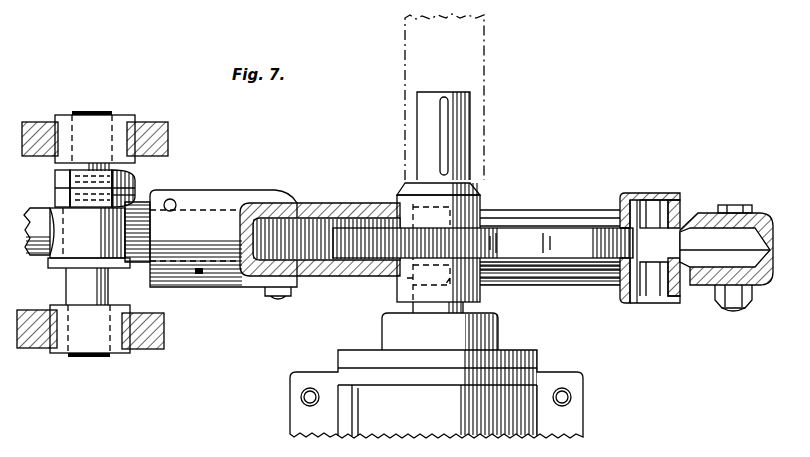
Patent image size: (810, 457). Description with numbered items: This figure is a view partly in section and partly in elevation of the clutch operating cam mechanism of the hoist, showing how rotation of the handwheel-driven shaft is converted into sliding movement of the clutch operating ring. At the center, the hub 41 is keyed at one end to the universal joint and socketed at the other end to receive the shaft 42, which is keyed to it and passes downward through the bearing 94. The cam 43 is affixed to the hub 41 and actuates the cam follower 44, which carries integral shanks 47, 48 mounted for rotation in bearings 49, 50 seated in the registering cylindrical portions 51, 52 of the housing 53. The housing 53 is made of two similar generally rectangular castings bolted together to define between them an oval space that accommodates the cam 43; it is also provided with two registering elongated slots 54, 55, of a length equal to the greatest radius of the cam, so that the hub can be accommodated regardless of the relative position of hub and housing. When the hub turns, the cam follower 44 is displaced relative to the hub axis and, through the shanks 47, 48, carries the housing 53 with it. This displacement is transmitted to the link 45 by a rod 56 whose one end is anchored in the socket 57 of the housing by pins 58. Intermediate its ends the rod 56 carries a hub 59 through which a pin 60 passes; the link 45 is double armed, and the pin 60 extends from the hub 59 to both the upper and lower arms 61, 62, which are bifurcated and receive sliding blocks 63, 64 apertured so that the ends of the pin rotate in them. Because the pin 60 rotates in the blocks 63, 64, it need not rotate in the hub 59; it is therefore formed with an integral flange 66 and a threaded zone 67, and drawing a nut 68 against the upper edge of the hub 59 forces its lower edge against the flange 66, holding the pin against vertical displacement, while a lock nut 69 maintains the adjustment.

The hub 41 is at (484, 206).
The shaft 42 is at (472, 314).
The cam 43 is at (554, 245).
The cam follower 44 is at (686, 220).
The link 45 is at (162, 123).
The shank 47 is at (652, 202).
The shank 48 is at (646, 304).
The bearing 49 is at (627, 194).
The bearing 50 is at (619, 284).
The cylindrical portion 51 is at (681, 204).
The cylindrical portion 52 is at (688, 290).
The housing 53 is at (711, 213).
The elongated slot 54 is at (533, 213).
The elongated slot 55 is at (536, 268).
The rod 56 is at (34, 216).
The socket 57 is at (208, 195).
The pin 58 is at (200, 276).
The hub 59 is at (66, 258).
The pin 60 is at (104, 280).
The upper arm 61 is at (36, 122).
The lower arm 62 is at (35, 345).
The sliding block 63 is at (120, 120).
The sliding block 64 is at (118, 350).
The flange 66 is at (64, 268).
The threaded zone 67 is at (136, 196).
The nut 68 is at (56, 200).
The lock nut 69 is at (135, 190).
The bearing 94 is at (446, 417).